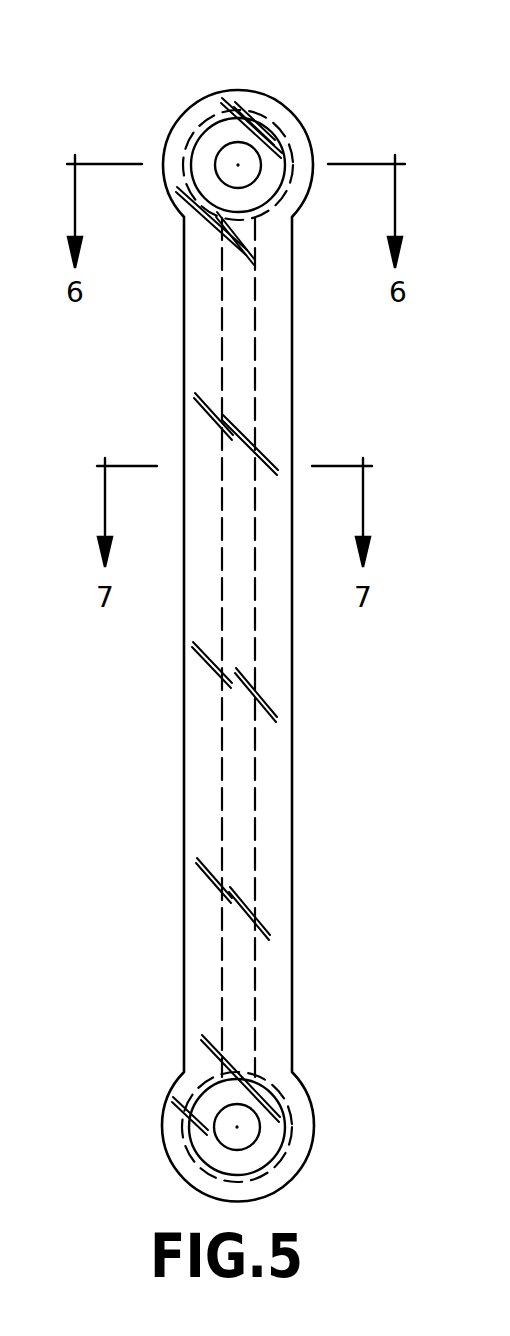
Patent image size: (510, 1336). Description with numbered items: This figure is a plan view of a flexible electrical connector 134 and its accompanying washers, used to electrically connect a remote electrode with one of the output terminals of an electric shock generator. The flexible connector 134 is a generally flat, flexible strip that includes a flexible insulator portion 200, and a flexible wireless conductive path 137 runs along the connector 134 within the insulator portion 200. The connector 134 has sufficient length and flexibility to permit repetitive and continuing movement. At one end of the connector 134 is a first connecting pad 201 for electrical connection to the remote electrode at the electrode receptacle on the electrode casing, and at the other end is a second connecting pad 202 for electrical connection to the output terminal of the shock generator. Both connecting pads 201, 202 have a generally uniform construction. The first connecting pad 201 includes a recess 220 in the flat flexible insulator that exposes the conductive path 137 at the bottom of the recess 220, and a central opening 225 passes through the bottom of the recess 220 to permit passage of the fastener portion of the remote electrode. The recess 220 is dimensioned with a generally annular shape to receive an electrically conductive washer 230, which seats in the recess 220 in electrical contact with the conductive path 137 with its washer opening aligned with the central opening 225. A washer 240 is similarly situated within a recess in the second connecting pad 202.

The flexible electrical connector 134 is at (302, 840).
The conductive path 137 is at (240, 658).
The flexible insulator portion 200 is at (283, 640).
The first connecting pad 201 is at (312, 107).
The second connecting pad 202 is at (316, 1157).
The recess 220 is at (289, 176).
The central opening 225 is at (233, 160).
The electrically conductive washer 230 is at (207, 140).
The washer 240 is at (273, 1133).